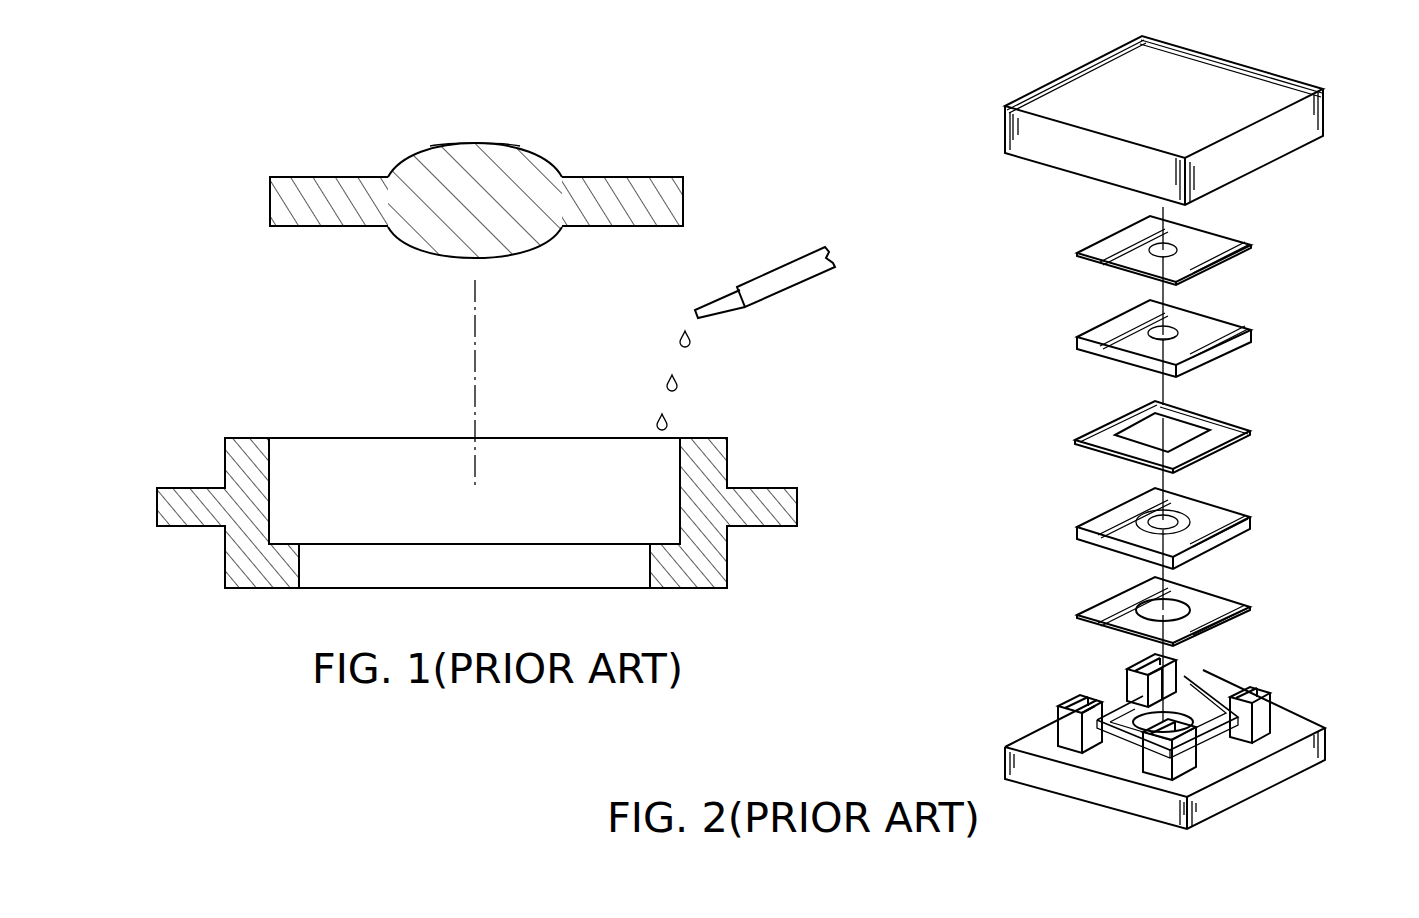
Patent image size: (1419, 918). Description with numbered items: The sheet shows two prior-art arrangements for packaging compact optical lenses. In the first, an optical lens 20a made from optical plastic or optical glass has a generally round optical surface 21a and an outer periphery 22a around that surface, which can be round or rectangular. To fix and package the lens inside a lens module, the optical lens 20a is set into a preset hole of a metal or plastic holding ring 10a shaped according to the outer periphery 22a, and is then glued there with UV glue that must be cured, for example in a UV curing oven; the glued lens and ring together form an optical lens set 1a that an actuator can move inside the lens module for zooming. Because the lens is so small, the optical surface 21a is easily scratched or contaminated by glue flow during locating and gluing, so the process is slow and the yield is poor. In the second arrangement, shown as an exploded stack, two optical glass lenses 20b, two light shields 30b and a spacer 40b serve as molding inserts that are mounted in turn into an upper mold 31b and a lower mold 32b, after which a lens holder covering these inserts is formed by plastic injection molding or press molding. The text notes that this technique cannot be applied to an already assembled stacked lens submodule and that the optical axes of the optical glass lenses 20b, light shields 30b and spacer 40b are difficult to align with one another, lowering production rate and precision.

In FIG. 1, the optical lens set 1a is at (792, 127).
In FIG. 1, the holding ring 10a is at (710, 453).
In FIG. 1, the optical lens 20a is at (533, 163).
In FIG. 1, the optical surface 21a is at (452, 142).
In FIG. 1, the outer periphery 22a is at (650, 177).
In FIG. 2, the mold 31b is at (1262, 90).
In FIG. 2, the light shield 30b is at (1205, 245).
In FIG. 2, the optical glass lens 20b is at (1202, 328).
In FIG. 2, the spacer 40b is at (1102, 433).
In FIG. 2, the mold 32b is at (1285, 728).